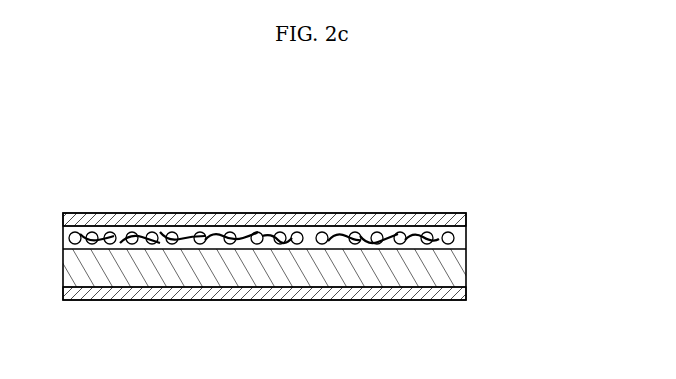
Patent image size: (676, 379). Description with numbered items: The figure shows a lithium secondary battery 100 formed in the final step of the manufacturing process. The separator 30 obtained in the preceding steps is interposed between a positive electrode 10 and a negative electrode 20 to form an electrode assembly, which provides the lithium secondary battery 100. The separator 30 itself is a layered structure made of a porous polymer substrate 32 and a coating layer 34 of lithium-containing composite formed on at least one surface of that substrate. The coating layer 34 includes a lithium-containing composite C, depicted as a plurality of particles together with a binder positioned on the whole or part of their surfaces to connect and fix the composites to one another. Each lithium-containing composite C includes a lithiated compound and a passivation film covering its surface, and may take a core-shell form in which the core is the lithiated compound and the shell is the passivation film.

The lithium secondary battery 100 is at (133, 163).
The negative electrode 20 is at (413, 213).
The separator 30 is at (513, 221).
The coating layer of lithium-containing composite 34 is at (467, 237).
The porous polymer substrate 32 is at (467, 272).
The lithium-containing composite C is at (323, 226).
The positive electrode 10 is at (415, 300).